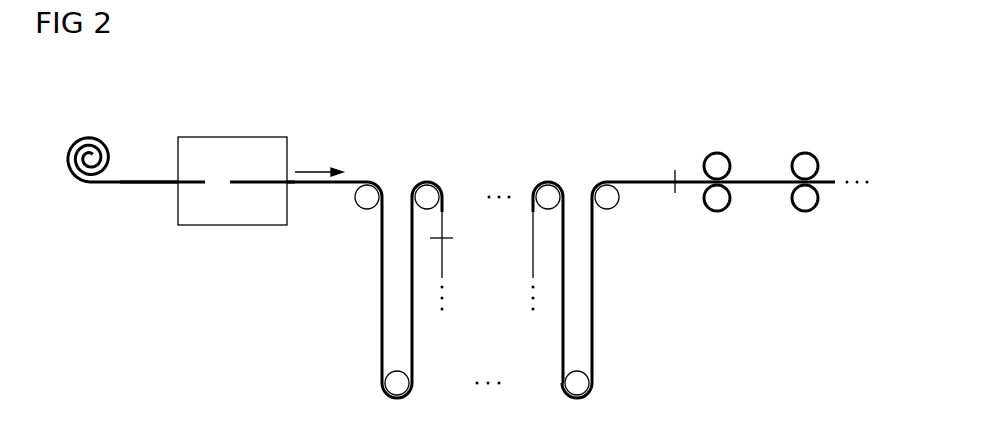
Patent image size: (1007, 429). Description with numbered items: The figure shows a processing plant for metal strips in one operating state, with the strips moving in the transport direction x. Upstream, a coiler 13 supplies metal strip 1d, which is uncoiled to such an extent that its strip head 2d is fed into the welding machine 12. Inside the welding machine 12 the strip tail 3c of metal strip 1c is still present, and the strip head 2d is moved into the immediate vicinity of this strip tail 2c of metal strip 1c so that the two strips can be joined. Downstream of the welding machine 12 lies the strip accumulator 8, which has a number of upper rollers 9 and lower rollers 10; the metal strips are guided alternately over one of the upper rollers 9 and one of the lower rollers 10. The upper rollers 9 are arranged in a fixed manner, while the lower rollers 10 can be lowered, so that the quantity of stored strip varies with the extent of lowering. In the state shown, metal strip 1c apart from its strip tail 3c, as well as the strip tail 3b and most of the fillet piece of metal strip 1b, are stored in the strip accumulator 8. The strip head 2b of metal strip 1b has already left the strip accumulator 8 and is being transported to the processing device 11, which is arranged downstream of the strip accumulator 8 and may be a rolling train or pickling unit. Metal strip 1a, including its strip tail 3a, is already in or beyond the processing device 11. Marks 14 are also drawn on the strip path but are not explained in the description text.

The coiler 13 is at (93, 133).
The welding machine 12 is at (230, 137).
The strip head of metal strip 1d 2d is at (135, 180).
The metal strip 1d is at (115, 184).
The strip tail of metal strip 1c 3c is at (245, 184).
The transport direction x is at (310, 170).
The upper rollers 9 is at (368, 195).
The strip accumulator 8 is at (494, 220).
The metal strip 1c is at (381, 271).
The lower rollers 10 is at (395, 385).
The strip tail of metal strip 1c 2c is at (442, 212).
The strip tail of metal strip 1b 3b is at (445, 258).
The mark / cut position 14 is at (453, 238).
The metal strip 1b is at (594, 285).
The strip head of metal strip 1b 2b is at (648, 178).
The strip tail of metal strip 1a 3a is at (688, 178).
The processing device 11 is at (786, 126).
The metal strip 1a is at (767, 178).